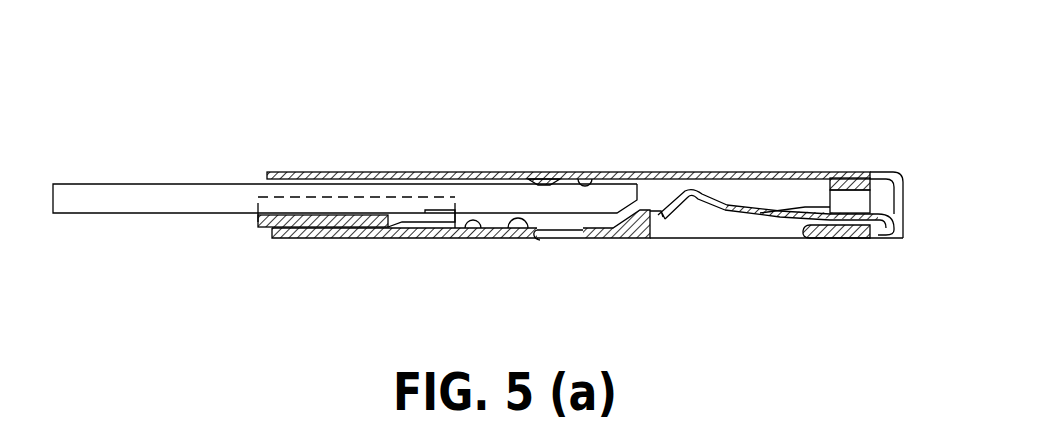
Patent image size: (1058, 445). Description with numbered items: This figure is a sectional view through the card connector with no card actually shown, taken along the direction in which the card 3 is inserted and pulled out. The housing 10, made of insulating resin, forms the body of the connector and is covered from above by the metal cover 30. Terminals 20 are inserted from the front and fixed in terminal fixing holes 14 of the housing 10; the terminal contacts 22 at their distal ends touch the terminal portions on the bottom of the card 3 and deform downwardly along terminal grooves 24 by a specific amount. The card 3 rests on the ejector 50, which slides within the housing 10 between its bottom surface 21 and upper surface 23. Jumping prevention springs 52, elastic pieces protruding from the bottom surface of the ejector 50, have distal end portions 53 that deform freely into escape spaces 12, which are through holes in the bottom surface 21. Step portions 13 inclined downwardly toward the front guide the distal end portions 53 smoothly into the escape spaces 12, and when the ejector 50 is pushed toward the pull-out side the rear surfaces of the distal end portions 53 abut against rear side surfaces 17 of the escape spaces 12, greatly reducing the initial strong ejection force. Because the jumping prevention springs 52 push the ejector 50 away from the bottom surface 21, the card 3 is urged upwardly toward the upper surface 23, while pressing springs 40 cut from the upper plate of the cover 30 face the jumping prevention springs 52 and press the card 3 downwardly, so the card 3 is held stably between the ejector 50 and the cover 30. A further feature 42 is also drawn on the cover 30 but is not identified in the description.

The card 3 is at (176, 214).
The housing 10 is at (840, 240).
The escape space 12 is at (582, 237).
The step portion 13 is at (510, 238).
The terminal fixing hole 14 is at (862, 203).
The rear side surface 17 is at (534, 240).
The terminal 20 is at (786, 222).
The bottom surface 21 is at (465, 238).
The terminal contact 22 is at (687, 196).
The upper surface 23 is at (587, 179).
The terminal groove 24 is at (687, 232).
The cover 30 is at (786, 172).
The pressing spring 40 is at (370, 172).
The sleeve indentation 42 is at (543, 178).
The ejector 50 is at (318, 196).
The jumping prevention spring 52 is at (310, 238).
The distal end portion 53 is at (405, 238).